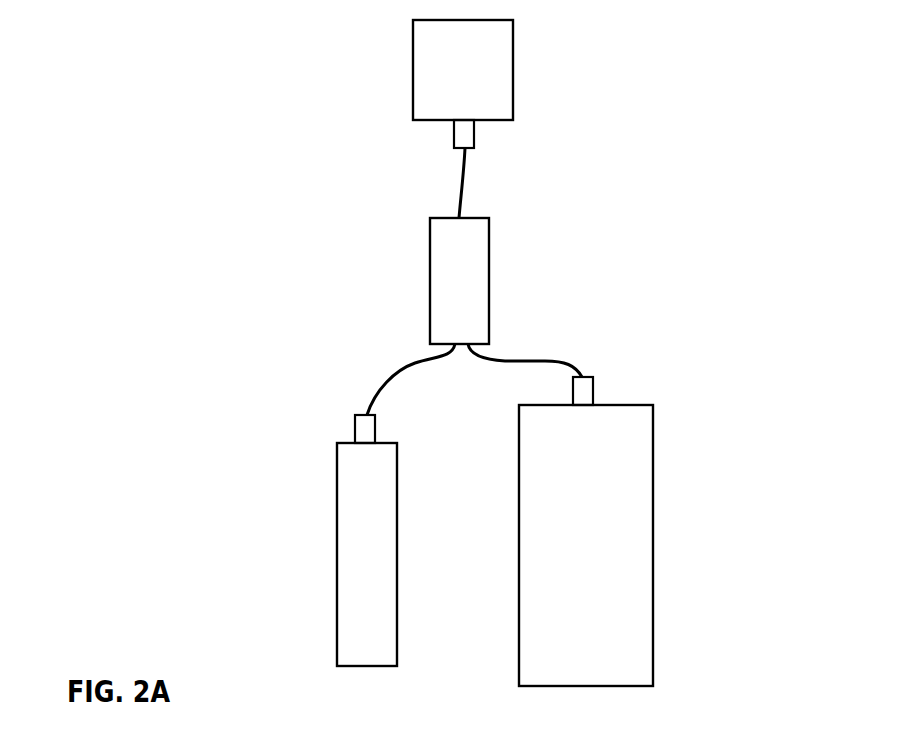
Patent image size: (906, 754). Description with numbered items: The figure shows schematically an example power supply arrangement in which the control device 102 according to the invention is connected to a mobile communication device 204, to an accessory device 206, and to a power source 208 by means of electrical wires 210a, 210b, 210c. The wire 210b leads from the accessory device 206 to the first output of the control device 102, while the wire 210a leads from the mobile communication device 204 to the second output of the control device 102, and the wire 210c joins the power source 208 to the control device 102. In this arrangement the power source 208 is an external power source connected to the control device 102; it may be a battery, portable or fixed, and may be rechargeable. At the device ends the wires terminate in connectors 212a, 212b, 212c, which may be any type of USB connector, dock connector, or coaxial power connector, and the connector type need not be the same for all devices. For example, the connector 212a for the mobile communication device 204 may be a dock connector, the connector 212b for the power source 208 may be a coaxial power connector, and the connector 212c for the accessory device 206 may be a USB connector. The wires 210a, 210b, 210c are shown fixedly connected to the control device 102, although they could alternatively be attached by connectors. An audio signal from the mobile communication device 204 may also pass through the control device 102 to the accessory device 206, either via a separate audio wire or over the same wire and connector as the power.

The control device 102 is at (489, 280).
The mobile communication device 204 is at (653, 510).
The accessory device 206 is at (514, 90).
The power source 208 is at (337, 520).
The electrical wire 210a is at (553, 360).
The electrical wire 210b is at (458, 192).
The electrical wire 210c is at (385, 380).
The connector 212a is at (593, 395).
The connector 212b is at (355, 430).
The connector 212c is at (474, 135).